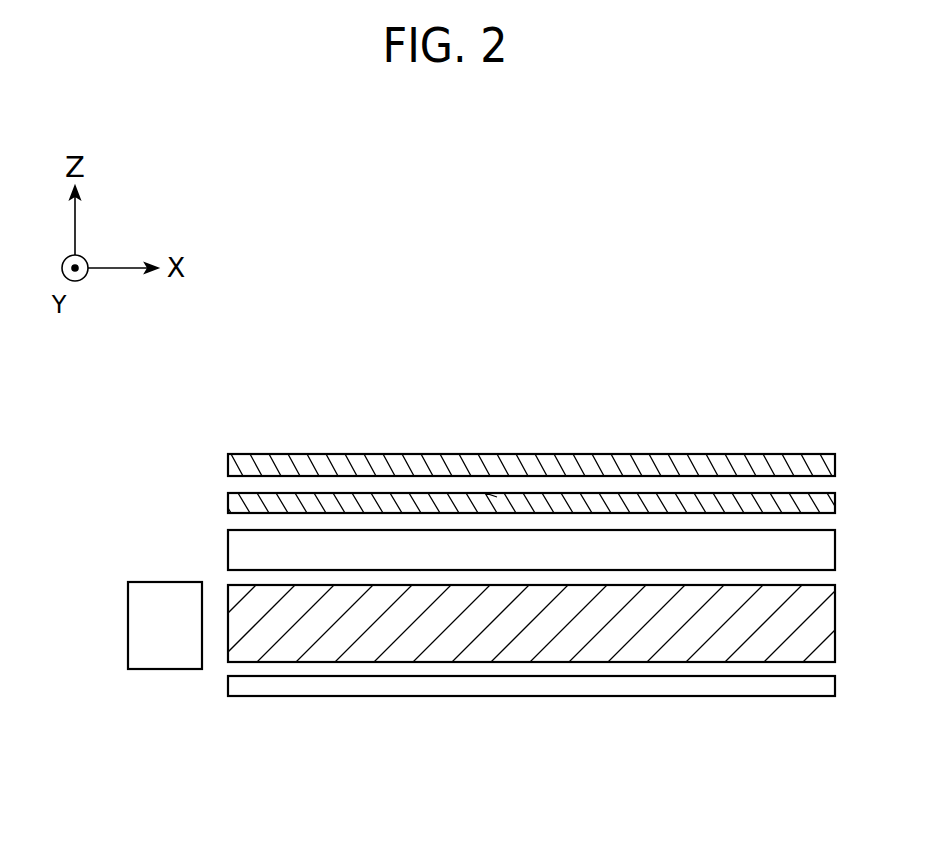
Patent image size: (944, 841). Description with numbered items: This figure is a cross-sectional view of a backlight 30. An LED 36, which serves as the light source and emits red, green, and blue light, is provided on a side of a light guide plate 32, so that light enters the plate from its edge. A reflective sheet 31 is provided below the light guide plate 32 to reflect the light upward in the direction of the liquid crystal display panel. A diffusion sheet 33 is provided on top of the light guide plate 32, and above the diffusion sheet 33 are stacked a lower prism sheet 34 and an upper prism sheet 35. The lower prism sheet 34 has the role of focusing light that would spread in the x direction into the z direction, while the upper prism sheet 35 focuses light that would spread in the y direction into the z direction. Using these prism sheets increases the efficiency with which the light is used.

The backlight 30 is at (216, 346).
The reflective sheet 31 is at (383, 688).
The light guide plate 32 is at (532, 643).
The diffusion sheet 33 is at (675, 547).
The lower prism sheet 34 is at (513, 505).
The upper prism sheet 35 is at (390, 468).
The LED 36 is at (168, 653).